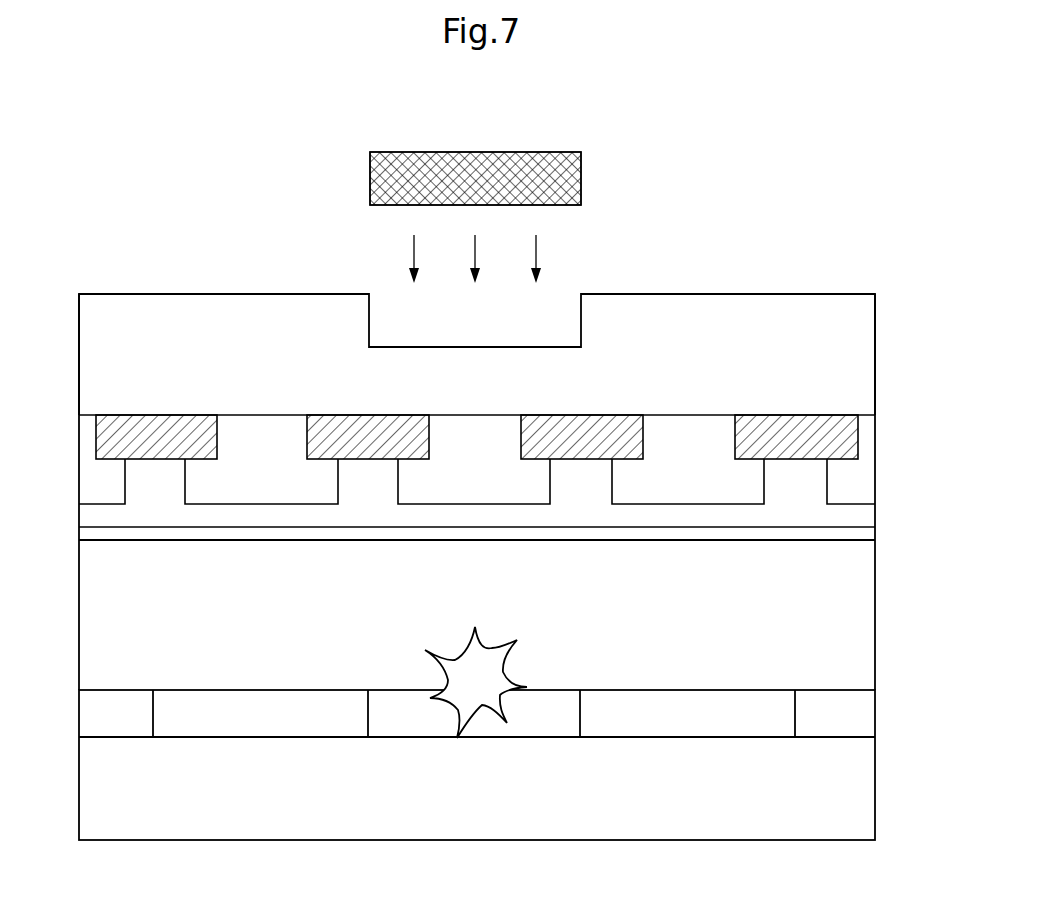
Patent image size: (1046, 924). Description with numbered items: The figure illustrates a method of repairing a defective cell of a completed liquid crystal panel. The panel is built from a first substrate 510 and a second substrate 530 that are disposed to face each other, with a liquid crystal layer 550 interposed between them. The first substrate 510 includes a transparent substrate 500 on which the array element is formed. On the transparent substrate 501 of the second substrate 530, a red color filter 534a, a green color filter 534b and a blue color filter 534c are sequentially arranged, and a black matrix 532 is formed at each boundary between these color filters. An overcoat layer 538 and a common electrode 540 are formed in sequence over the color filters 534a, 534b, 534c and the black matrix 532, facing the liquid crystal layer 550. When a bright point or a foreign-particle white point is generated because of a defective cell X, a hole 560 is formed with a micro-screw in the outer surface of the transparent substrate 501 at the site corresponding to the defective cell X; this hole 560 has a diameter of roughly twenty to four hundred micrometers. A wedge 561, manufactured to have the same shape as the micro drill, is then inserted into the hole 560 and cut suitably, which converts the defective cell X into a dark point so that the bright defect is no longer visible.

The wedge 561 is at (512, 152).
The hole 560 is at (520, 347).
The transparent substrate 501 is at (594, 392).
The second substrate 530 is at (878, 294).
The black matrix 532 is at (145, 437).
The red color filter 534a is at (300, 483).
The green color filter 534b is at (477, 483).
The blue color filter 534c is at (690, 482).
The overcoat layer 538 is at (745, 515).
The common electrode 540 is at (810, 533).
The liquid crystal layer 550 is at (878, 541).
The first substrate 510 is at (878, 691).
The transparent substrate 500 is at (470, 787).
The defective cell X is at (475, 703).